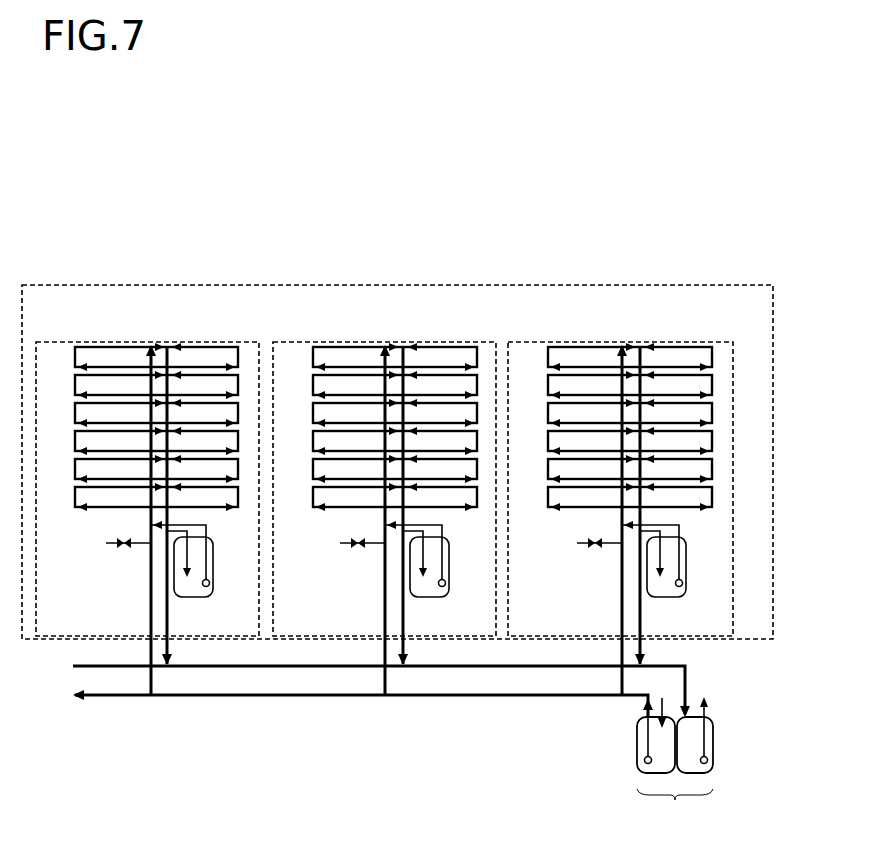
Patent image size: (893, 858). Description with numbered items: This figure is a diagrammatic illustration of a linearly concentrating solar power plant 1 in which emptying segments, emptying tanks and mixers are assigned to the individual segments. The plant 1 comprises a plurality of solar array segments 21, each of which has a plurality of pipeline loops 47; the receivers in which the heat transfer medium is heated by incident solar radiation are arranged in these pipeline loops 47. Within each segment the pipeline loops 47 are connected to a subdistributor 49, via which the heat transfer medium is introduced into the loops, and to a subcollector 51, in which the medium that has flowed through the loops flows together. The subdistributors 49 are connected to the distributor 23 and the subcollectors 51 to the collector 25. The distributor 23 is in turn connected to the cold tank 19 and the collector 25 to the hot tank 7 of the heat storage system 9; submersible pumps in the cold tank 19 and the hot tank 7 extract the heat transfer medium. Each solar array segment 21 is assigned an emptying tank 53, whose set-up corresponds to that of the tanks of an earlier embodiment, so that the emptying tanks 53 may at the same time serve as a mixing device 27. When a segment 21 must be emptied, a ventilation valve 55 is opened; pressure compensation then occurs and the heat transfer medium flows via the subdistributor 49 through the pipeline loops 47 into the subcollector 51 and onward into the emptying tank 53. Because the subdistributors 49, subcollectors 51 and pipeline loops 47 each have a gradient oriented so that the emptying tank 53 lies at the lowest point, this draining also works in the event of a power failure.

The linearly concentrating solar power plant 1 is at (450, 259).
The solar array segment 21 is at (62, 341).
The pipeline loop 47 is at (130, 433).
The subdistributor 49 is at (151, 597).
The subcollector 51 is at (173, 624).
The emptying tank 53 is at (213, 566).
The mixing device 27 is at (219, 600).
The ventilation valve 55 is at (106, 543).
The distributor 23 is at (213, 697).
The collector 25 is at (256, 669).
The cold tank 19 is at (637, 745).
The hot tank 7 is at (713, 742).
The heat storage system 9 is at (670, 760).